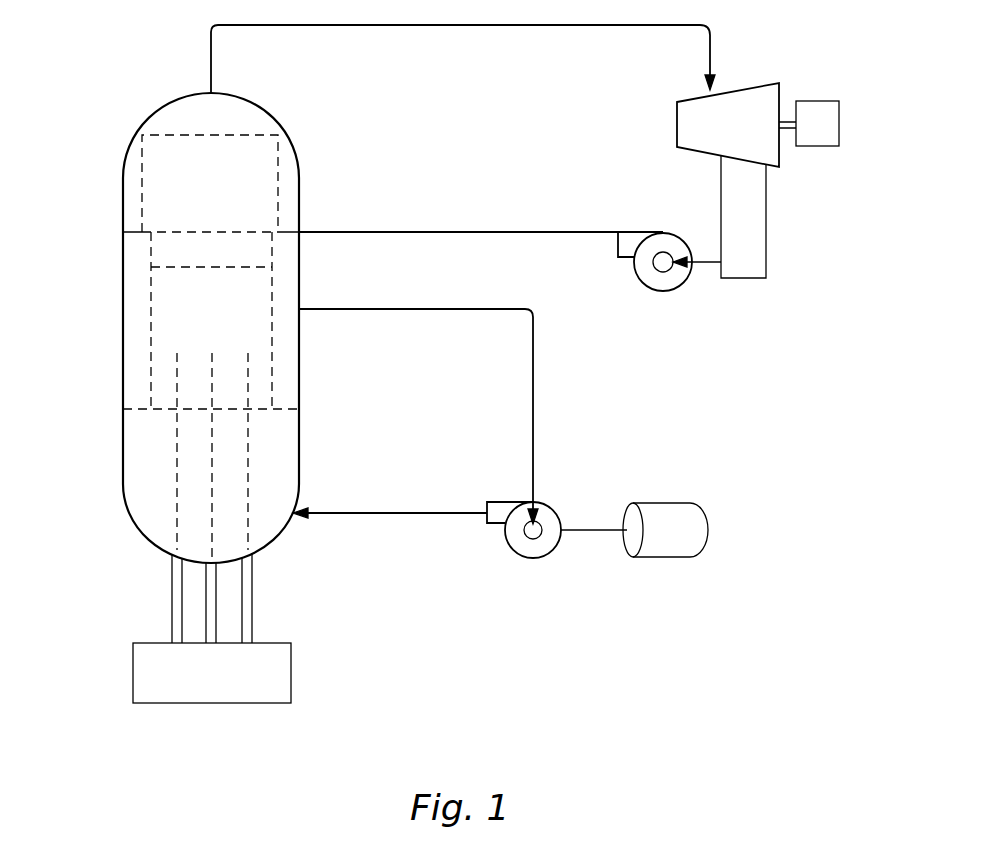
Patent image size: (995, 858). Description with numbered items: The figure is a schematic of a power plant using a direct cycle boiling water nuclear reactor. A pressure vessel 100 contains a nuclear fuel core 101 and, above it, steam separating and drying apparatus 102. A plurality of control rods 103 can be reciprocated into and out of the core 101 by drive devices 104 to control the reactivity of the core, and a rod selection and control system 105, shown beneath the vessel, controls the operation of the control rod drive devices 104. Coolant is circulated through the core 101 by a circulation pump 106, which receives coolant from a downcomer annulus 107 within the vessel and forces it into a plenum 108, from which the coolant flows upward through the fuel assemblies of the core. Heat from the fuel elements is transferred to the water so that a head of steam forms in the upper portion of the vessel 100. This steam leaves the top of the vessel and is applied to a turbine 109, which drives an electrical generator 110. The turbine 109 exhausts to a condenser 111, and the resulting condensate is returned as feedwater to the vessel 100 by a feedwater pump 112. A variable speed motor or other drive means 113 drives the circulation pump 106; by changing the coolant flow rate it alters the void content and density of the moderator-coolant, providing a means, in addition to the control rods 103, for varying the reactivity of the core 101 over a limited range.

The pressure vessel 100 is at (299, 178).
The nuclear fuel core 101 is at (151, 317).
The steam separating and drying apparatus 102 is at (142, 180).
The control rods 103 is at (177, 468).
The control rod drive devices 104 is at (252, 588).
The rod selection and control system 105 is at (148, 643).
The circulation pump 106 is at (525, 555).
The downcomer annulus 107 is at (272, 283).
The plenum 108 is at (287, 480).
The turbine 109 is at (743, 88).
The electrical generator 110 is at (820, 147).
The condenser 111 is at (766, 242).
The feedwater pump 112 is at (670, 292).
The variable speed motor 113 is at (678, 503).